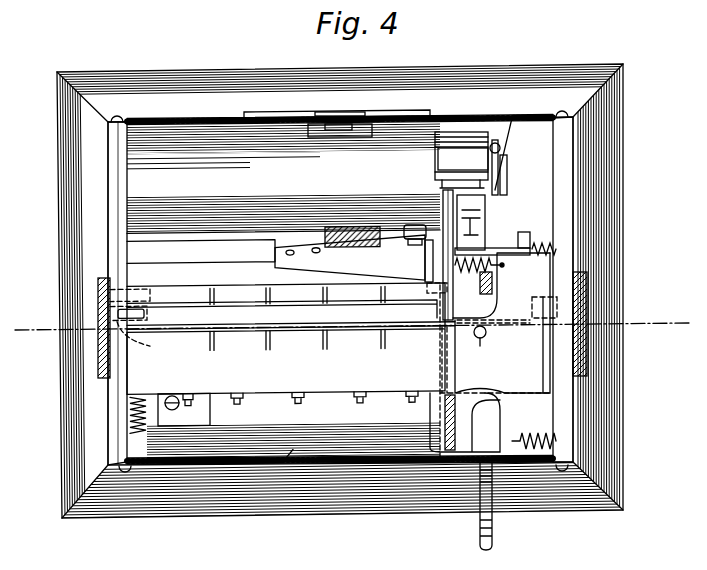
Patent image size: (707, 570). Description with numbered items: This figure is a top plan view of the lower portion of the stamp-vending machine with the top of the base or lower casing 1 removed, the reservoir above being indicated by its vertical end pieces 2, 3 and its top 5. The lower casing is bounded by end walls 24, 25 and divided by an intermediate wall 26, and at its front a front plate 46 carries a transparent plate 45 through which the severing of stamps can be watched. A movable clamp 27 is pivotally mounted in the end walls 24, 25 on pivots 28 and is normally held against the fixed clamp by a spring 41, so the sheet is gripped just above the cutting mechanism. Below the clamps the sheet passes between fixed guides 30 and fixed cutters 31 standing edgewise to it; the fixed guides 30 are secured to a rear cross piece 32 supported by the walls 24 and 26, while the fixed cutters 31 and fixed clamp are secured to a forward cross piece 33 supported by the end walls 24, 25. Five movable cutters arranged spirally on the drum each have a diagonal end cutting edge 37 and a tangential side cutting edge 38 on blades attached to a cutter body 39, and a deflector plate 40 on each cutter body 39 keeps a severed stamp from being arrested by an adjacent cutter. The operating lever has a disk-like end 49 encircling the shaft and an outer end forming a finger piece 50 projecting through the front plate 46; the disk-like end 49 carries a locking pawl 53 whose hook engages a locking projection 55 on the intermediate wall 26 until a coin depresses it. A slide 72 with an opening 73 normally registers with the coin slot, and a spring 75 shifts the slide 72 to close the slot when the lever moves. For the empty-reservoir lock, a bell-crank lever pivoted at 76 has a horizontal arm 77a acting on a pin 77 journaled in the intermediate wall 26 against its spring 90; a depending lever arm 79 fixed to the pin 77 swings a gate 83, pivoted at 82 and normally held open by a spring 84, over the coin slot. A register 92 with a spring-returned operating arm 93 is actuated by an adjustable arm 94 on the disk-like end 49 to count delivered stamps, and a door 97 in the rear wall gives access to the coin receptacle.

The lower casing 1 is at (330, 291).
The vertical end piece 2 is at (98, 301).
The vertical end piece 3 is at (590, 300).
The top 5 is at (352, 326).
The end wall 24 is at (112, 230).
The end wall 25 is at (560, 117).
The intermediate wall 26 is at (445, 200).
The movable clamp 27 is at (331, 328).
The pivots 28 is at (278, 322).
The fixed guides 30 is at (272, 300).
The fixed cutters 31 is at (270, 341).
The rear cross piece 32 is at (222, 285).
The forward cross piece 33 is at (286, 367).
The diagonal end cutting edge 37 is at (343, 232).
The side cutting edge 38 is at (405, 261).
The movable cutter body 39 is at (311, 253).
The deflector plate 40 is at (324, 232).
The spring 41 is at (130, 405).
The transparent plate 45 is at (284, 450).
The front plate 46 is at (333, 444).
The disk-like end 49 is at (490, 314).
The finger piece 50 is at (480, 520).
The locking pawl 53 is at (471, 222).
The locking projection 55 is at (408, 269).
The slide 72 is at (432, 412).
The opening 73 is at (442, 426).
The spring 75 is at (539, 438).
The pivot 76 is at (414, 225).
The pin 77 is at (506, 249).
The horizontal arm 77a is at (350, 258).
The depending lever arm 79 is at (540, 243).
The pivot 82 is at (502, 323).
The gate 83 is at (465, 412).
The spring 84 is at (489, 276).
The spring 90 is at (505, 323).
The register 92 is at (435, 158).
The operating arm 93 is at (499, 192).
The arm 94 is at (508, 206).
The door 97 is at (273, 118).